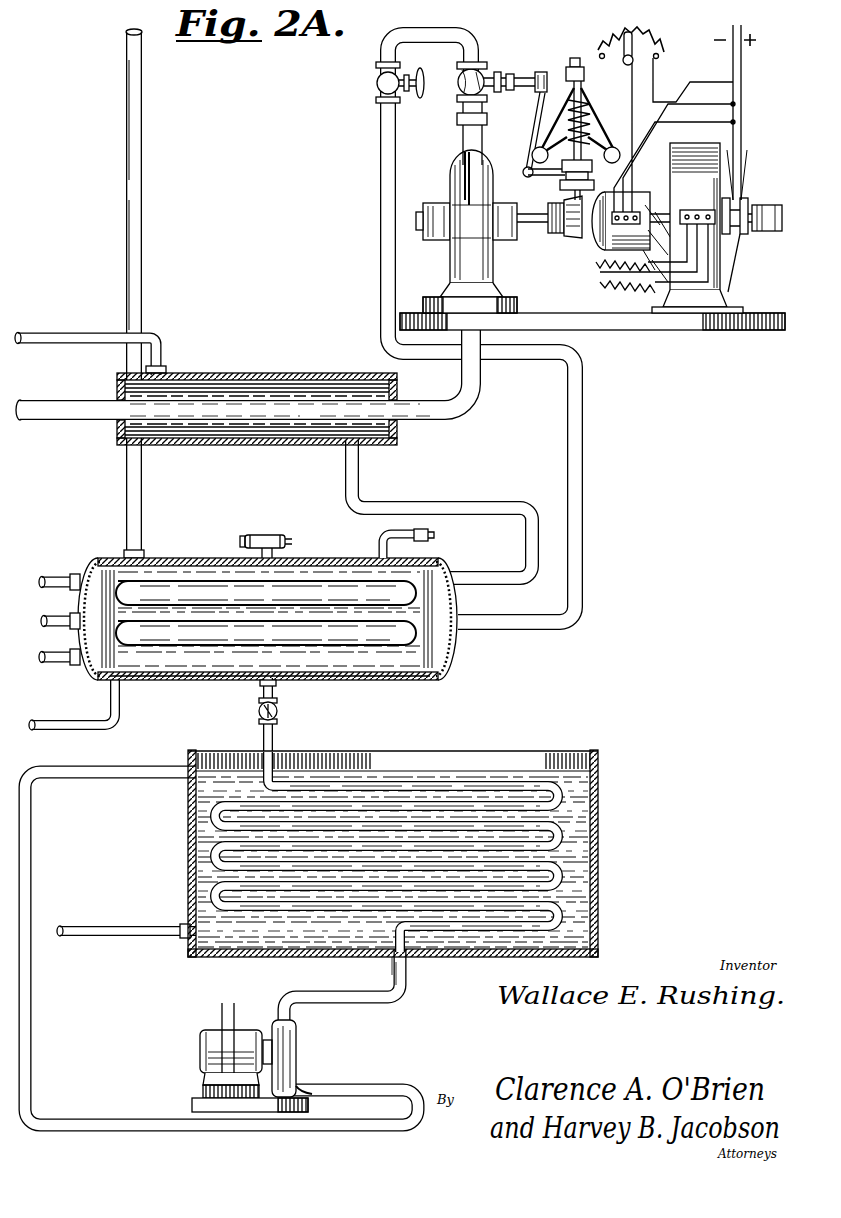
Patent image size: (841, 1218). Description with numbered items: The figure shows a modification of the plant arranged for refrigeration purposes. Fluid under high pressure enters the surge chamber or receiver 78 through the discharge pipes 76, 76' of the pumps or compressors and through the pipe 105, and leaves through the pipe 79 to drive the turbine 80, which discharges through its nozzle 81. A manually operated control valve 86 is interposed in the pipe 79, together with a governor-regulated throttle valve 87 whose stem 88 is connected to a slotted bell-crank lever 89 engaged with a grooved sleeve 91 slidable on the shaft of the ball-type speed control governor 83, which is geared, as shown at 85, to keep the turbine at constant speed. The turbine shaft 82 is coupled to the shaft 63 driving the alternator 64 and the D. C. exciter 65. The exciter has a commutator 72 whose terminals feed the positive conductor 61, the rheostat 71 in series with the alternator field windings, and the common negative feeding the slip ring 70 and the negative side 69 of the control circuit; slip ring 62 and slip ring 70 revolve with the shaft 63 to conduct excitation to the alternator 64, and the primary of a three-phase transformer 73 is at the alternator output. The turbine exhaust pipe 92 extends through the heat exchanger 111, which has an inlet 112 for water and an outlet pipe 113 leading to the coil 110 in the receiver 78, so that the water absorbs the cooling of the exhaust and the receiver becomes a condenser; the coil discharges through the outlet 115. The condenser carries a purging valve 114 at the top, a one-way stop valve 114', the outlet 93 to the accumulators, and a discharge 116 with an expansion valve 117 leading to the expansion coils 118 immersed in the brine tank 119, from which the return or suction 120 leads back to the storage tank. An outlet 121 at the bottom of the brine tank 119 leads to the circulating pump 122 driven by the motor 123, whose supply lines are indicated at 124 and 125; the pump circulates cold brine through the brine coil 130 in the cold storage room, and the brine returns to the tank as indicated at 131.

The positive conductor 61 is at (748, 76).
The slip ring 62 is at (744, 200).
The shaft 63 is at (772, 232).
The alternator 64 is at (697, 228).
The exciter 65 is at (604, 248).
The negative side of the control circuit 69 is at (724, 60).
The slip ring 70 is at (736, 262).
The rheostat 71 is at (662, 46).
The commutator 72 is at (656, 243).
The three-phase transformer 73 is at (620, 282).
The discharge pipe 76 is at (59, 564).
The discharge pipe 76' is at (47, 610).
The surge chamber or receiver 78 is at (183, 682).
The pipe 79 is at (478, 52).
The turbine 80 is at (460, 190).
The nozzle 81 is at (479, 160).
The shaft of the turbine 82 is at (428, 226).
The speed control governor 83 is at (588, 128).
The gear 85 is at (552, 233).
The manually operated control valve 86 is at (374, 80).
The throttle valve 87 is at (460, 88).
The stem 88 is at (508, 80).
The bell-crank lever 89 is at (537, 125).
The grooved sleeve 91 is at (568, 176).
The pipe 92 is at (62, 409).
The outlet 93 is at (128, 139).
The pipe 105 is at (58, 653).
The coil 110 is at (190, 583).
The heat exchanger 111 is at (262, 373).
The inlet 112 is at (58, 334).
The outlet pipe 113 is at (524, 504).
The purging valve 114 is at (408, 533).
The refrigeration service or stop valve 114' is at (289, 538).
The outlet 115 is at (86, 713).
The discharge 116 is at (277, 692).
The expansion valve 117 is at (279, 712).
The expansion coils 118 is at (515, 790).
The brine tank 119 is at (600, 826).
The return or suction 120 is at (124, 926).
The outlet 121 is at (406, 977).
The circulating pump 122 is at (297, 1040).
The motor 123 is at (202, 1058).
The supply line 124 is at (235, 1006).
The supply line 125 is at (222, 1018).
The brine coil 130 is at (426, 1124).
The return 131 is at (100, 774).